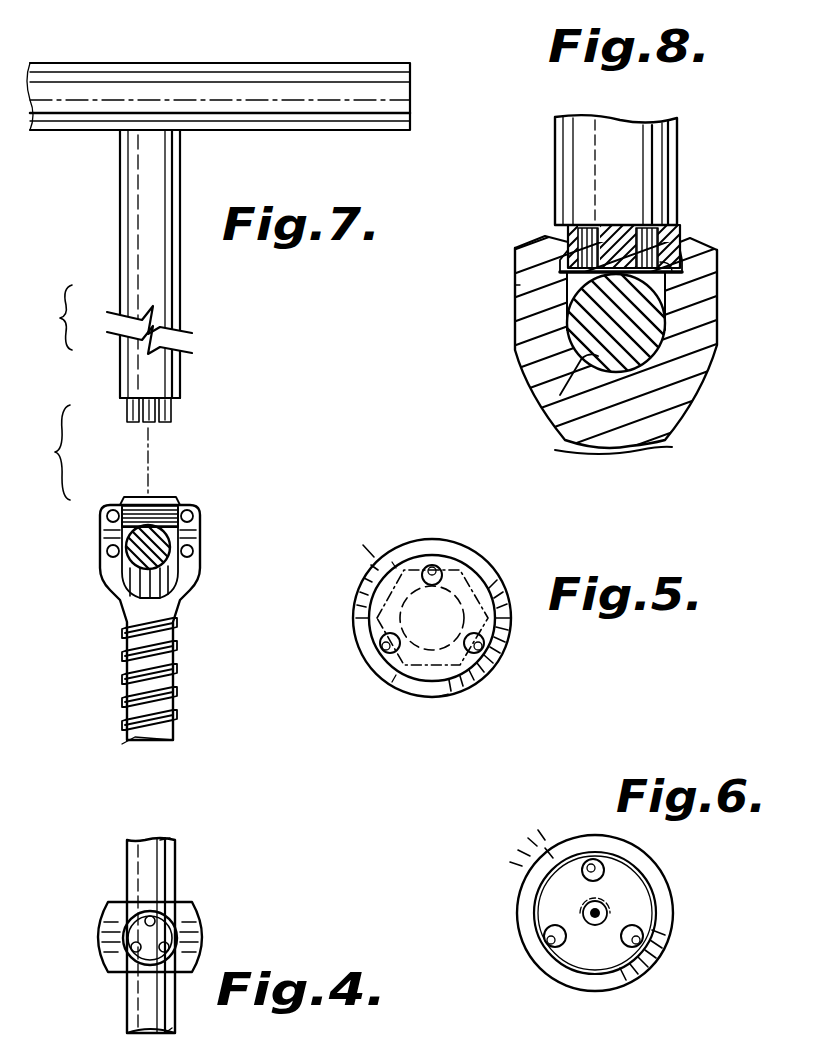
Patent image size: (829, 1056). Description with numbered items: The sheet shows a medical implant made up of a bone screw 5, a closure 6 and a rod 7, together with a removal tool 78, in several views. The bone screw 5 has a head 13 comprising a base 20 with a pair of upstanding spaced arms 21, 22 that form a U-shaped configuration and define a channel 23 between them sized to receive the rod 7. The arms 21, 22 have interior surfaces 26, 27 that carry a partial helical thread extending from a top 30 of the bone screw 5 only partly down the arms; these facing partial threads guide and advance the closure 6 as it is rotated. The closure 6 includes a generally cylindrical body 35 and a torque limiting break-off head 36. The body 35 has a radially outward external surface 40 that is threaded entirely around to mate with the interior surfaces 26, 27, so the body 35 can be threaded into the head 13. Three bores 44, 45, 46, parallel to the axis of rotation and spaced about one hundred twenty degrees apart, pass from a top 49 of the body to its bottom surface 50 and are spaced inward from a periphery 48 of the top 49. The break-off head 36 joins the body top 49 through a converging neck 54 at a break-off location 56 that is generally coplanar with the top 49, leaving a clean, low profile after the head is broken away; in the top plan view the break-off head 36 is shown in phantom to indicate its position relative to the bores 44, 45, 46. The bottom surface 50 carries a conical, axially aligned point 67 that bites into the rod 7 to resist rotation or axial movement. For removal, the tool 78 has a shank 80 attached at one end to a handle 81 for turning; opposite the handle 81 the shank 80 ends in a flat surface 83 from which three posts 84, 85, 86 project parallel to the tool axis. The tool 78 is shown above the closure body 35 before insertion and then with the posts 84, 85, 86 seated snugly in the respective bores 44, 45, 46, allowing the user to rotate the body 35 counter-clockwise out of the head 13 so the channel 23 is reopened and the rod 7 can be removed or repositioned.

In FIG. 7, the bone screw 5 is at (185, 590).
In FIG. 8, the bone screw 5 is at (717, 345).
In FIG. 4, the bone screw 5 is at (196, 905).
In FIG. 8, the closure 6 is at (685, 235).
In FIG. 5, the closure 6 is at (500, 648).
In FIG. 6, the closure 6 is at (540, 868).
In FIG. 4, the closure 6 is at (142, 955).
In FIG. 7, the rod 7 is at (128, 558).
In FIG. 8, the rod 7 is at (665, 322).
In FIG. 4, the rod 7 is at (175, 862).
In FIG. 8, the head 13 is at (510, 310).
In FIG. 8, the base 20 is at (703, 385).
In FIG. 7, the arm 21 is at (100, 540).
In FIG. 8, the arm 21 is at (515, 285).
In FIG. 4, the arm 21 is at (100, 938).
In FIG. 7, the arm 22 is at (200, 572).
In FIG. 4, the arm 22 is at (202, 938).
In FIG. 8, the channel 23 is at (560, 395).
In FIG. 8, the interior surface 26 is at (568, 240).
In FIG. 8, the interior surface 27 is at (700, 268).
In FIG. 8, the top 30 is at (690, 245).
In FIG. 7, the body 35 is at (122, 503).
In FIG. 5, the body 35 is at (418, 695).
In FIG. 6, the body 35 is at (673, 910).
In FIG. 5, the break-off head 36 is at (392, 562).
In FIG. 8, the external surface 40 is at (530, 245).
In FIG. 5, the external surface 40 is at (482, 560).
In FIG. 6, the external surface 40 is at (518, 928).
In FIG. 5, the bore 44 is at (380, 650).
In FIG. 6, the bore 44 is at (556, 945).
In FIG. 5, the bore 45 is at (434, 572).
In FIG. 6, the bore 45 is at (594, 870).
In FIG. 5, the bore 46 is at (485, 668).
In FIG. 6, the bore 46 is at (640, 940).
In FIG. 7, the periphery 48 is at (180, 500).
In FIG. 5, the periphery 48 is at (450, 694).
In FIG. 8, the top 49 is at (635, 225).
In FIG. 5, the top 49 is at (485, 588).
In FIG. 6, the bottom surface 50 is at (620, 872).
In FIG. 5, the neck 54 is at (392, 682).
In FIG. 5, the break-off location 56 is at (500, 625).
In FIG. 6, the point 67 is at (605, 910).
In FIG. 7, the tool 78 is at (180, 175).
In FIG. 8, the tool 78 is at (555, 138).
In FIG. 7, the shank 80 is at (180, 302).
In FIG. 8, the shank 80 is at (677, 190).
In FIG. 7, the handle 81 is at (322, 63).
In FIG. 7, the flat surface 83 is at (171, 406).
In FIG. 8, the flat surface 83 is at (598, 225).
In FIG. 7, the post 84 is at (128, 412).
In FIG. 8, the post 84 is at (565, 265).
In FIG. 7, the post 85 is at (143, 422).
In FIG. 8, the post 85 is at (680, 288).
In FIG. 7, the post 86 is at (171, 422).